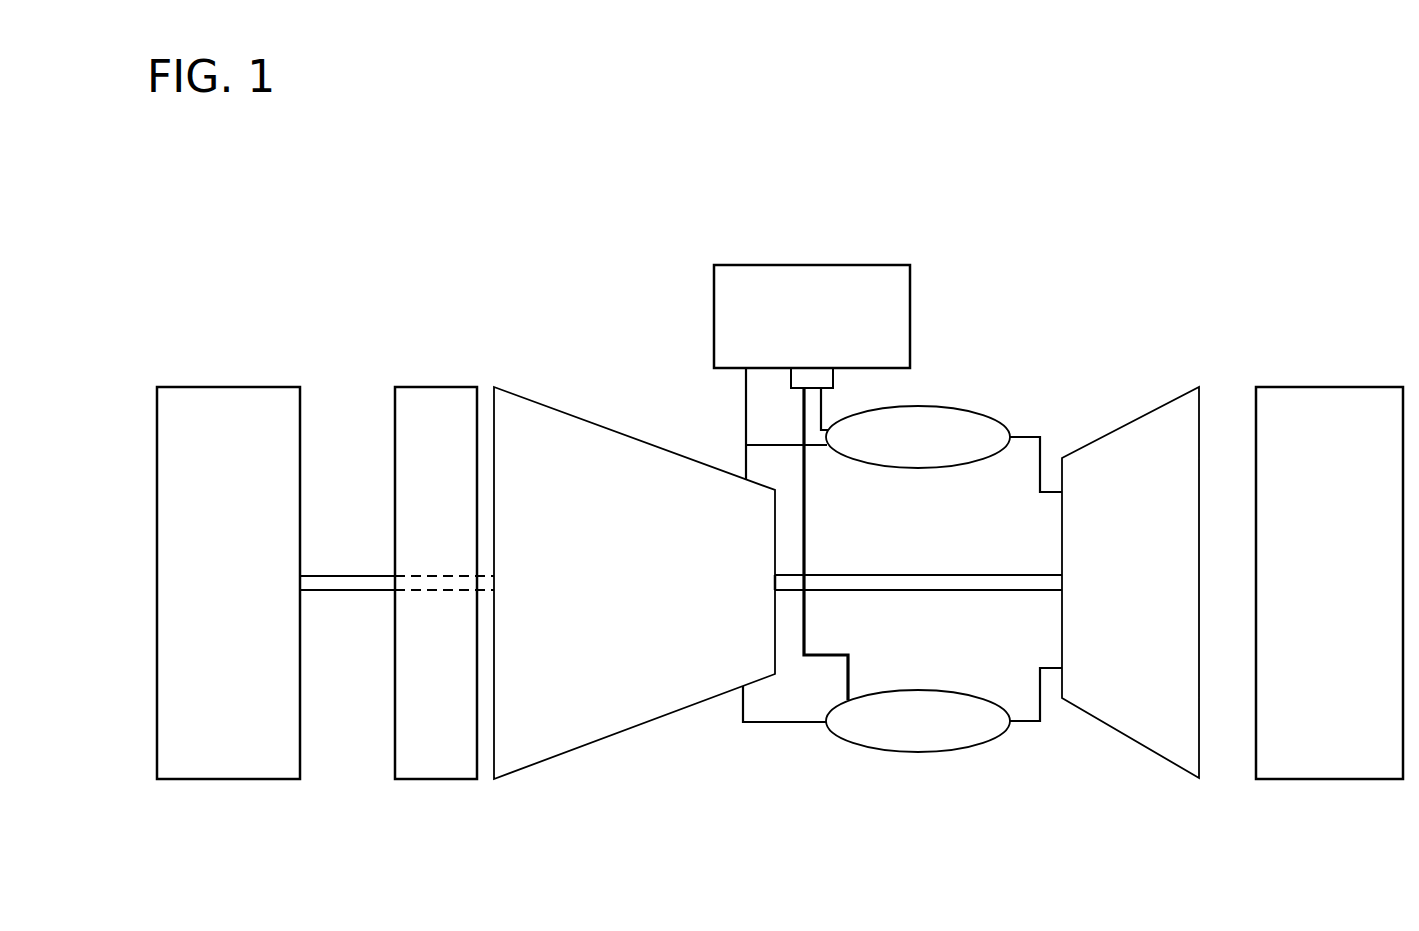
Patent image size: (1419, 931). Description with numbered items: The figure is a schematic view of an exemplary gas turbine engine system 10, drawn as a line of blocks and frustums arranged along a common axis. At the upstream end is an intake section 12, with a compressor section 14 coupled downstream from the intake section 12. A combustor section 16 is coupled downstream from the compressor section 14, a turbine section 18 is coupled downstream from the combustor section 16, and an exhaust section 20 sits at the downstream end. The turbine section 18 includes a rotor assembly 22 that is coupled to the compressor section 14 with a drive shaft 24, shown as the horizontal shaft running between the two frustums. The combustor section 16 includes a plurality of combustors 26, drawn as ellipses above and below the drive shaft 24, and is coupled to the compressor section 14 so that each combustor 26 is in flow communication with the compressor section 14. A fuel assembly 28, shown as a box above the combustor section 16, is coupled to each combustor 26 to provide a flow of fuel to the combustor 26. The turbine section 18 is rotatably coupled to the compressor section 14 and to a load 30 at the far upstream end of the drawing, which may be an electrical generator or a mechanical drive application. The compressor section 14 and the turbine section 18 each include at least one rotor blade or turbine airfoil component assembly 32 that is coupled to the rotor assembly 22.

The gas turbine engine system 10 is at (276, 237).
The intake section 12 is at (447, 386).
The compressor section 14 is at (620, 731).
The combustor section 16 is at (997, 379).
The turbine section 18 is at (1102, 437).
The exhaust section 20 is at (1308, 386).
The rotor assembly 22 is at (1030, 605).
The drive shaft 24 is at (923, 575).
The combustor 26 is at (918, 468).
The fuel assembly 28 is at (765, 265).
The load 30 is at (204, 386).
The rotor blade or turbine airfoil component assembly 32 is at (1108, 758).